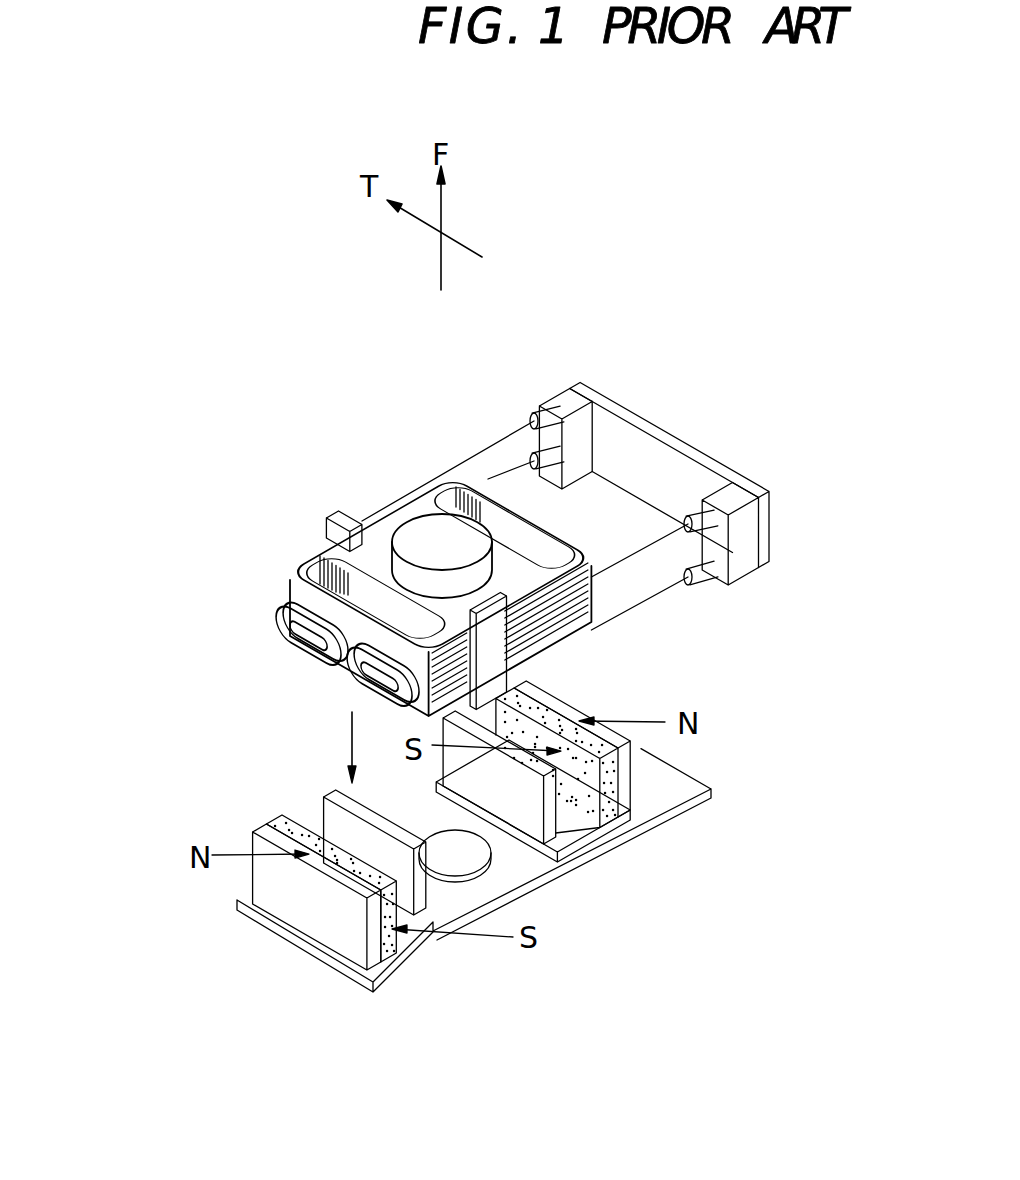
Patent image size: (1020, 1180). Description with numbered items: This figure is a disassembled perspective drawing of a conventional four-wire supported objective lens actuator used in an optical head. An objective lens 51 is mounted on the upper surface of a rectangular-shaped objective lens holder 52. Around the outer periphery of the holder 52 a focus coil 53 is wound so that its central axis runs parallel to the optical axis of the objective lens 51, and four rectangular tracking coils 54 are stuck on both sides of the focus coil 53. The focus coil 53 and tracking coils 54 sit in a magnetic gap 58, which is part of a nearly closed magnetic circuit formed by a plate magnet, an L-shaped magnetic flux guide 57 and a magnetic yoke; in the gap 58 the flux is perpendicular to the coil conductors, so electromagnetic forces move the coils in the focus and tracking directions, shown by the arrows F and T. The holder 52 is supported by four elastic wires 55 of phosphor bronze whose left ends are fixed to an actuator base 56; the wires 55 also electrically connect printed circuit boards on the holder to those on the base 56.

The objective lens 51 is at (427, 540).
The objective lens holder 52 is at (332, 553).
The focus coil 53 is at (563, 612).
The tracking coils 54 is at (280, 628).
The wires 55 is at (752, 618).
The actuator base 56 is at (640, 417).
The magnetic flux guide 57 is at (323, 938).
The magnetic gap 58 is at (317, 820).